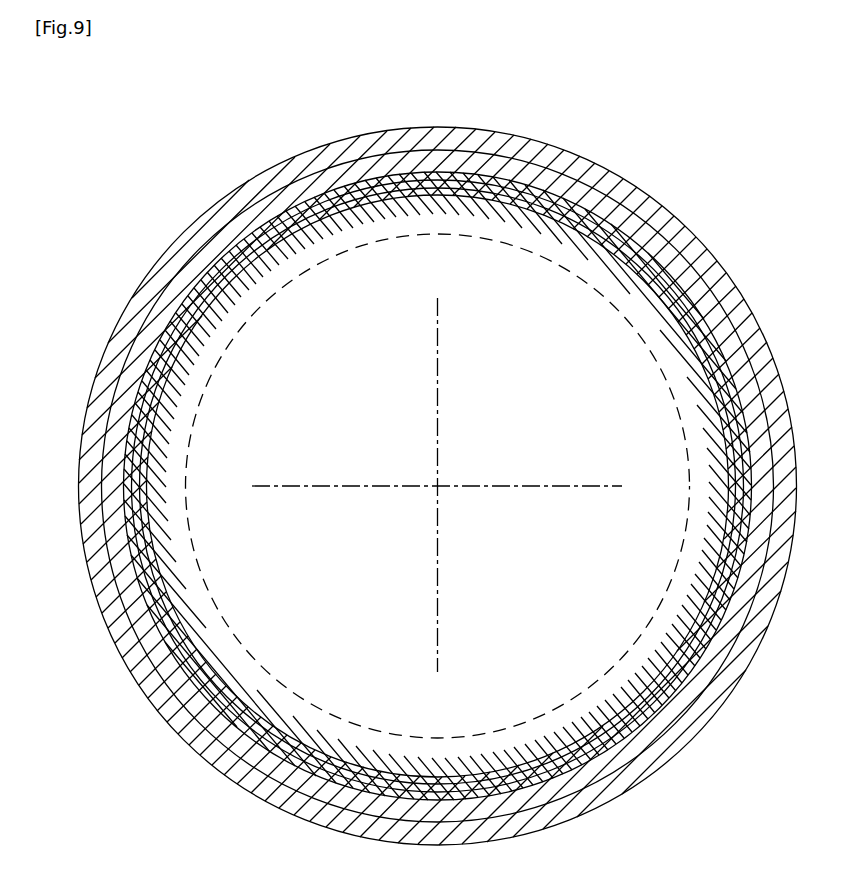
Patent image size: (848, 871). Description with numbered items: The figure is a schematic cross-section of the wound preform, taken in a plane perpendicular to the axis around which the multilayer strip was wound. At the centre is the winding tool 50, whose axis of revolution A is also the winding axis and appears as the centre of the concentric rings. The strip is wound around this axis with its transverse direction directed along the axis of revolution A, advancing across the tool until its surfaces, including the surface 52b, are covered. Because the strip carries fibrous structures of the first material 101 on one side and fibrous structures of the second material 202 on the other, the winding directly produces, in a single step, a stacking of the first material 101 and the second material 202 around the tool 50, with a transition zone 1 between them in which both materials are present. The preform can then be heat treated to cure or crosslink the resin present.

The second material 202 is at (438, 157).
The transition zone 1 is at (448, 172).
The first material 101 is at (540, 222).
The surface of the winding tool 52b is at (182, 380).
The winding tool 50 is at (257, 310).
The axis of revolution A is at (435, 483).